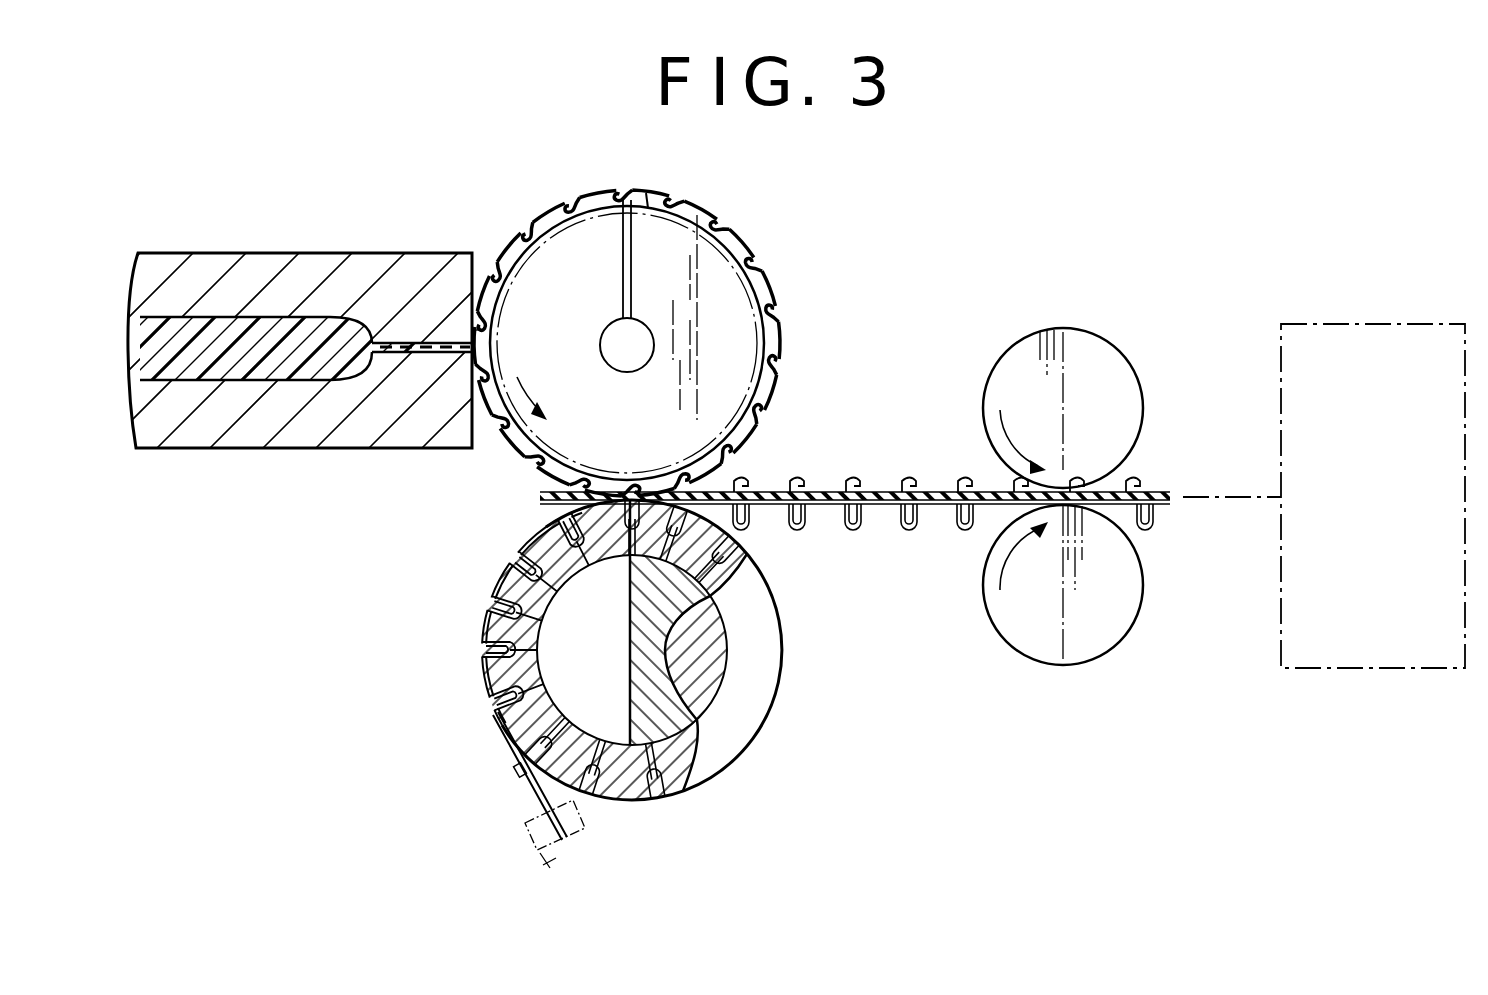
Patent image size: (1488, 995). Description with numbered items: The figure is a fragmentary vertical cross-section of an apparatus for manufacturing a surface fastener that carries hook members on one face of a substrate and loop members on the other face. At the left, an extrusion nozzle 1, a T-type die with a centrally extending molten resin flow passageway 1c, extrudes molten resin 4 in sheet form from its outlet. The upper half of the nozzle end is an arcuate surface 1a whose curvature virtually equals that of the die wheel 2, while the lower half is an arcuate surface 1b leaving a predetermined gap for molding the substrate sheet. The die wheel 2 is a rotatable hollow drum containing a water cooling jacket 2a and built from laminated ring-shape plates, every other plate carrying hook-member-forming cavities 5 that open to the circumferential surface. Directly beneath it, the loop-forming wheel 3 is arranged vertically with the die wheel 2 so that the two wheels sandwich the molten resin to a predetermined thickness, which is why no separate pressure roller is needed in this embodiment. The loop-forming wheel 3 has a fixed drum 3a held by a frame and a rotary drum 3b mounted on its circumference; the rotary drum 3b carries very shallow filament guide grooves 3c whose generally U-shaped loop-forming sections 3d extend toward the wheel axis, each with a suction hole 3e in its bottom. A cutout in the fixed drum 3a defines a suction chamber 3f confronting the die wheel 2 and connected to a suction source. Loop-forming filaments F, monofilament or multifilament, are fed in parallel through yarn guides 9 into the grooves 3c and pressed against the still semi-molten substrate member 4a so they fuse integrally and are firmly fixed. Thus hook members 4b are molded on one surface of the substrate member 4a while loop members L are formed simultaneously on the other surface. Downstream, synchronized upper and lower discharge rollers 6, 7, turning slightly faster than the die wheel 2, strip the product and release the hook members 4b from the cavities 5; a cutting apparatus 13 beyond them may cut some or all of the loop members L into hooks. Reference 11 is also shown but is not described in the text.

The extrusion nozzle 1 is at (283, 272).
The arcuate surface 1a is at (482, 332).
The arcuate surface 1b is at (518, 378).
The molten resin flow passageway 1c is at (392, 354).
The die wheel 2 is at (700, 217).
The water cooling jacket 2a is at (655, 192).
The loop-forming wheel 3 is at (598, 684).
The fixed drum 3a is at (713, 577).
The rotary drum 3b is at (675, 705).
The filament guide grooves 3c is at (625, 800).
The loop-forming sections 3d is at (592, 795).
The suction hole 3e is at (655, 778).
The suction chamber 3f is at (497, 636).
The molten resin 4 is at (195, 375).
The substrate member 4a is at (933, 490).
The hook members 4b is at (850, 488).
The hook-member-forming cavities 5 is at (778, 316).
The upper discharge roller 6 is at (1130, 396).
The lower discharge roller 7 is at (1045, 636).
The yarn guides 9 is at (517, 773).
The blade holder 11 is at (525, 822).
The cutting apparatus 13 is at (1345, 325).
The loop members L is at (852, 530).
The loop-forming filaments F is at (535, 856).